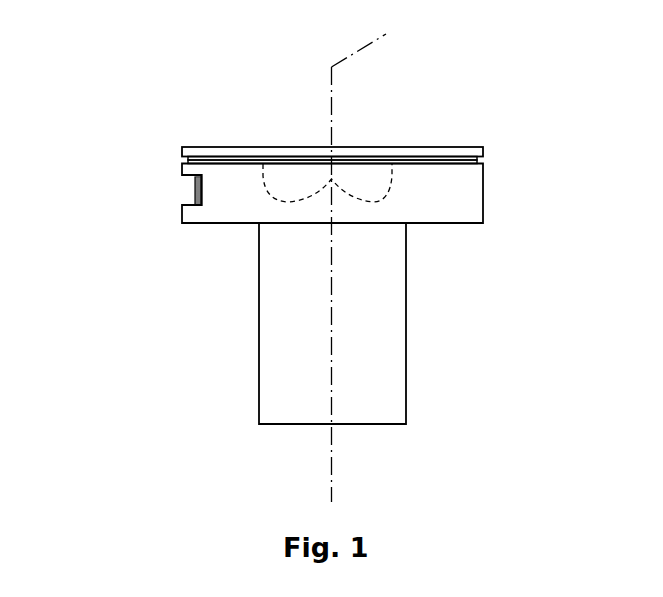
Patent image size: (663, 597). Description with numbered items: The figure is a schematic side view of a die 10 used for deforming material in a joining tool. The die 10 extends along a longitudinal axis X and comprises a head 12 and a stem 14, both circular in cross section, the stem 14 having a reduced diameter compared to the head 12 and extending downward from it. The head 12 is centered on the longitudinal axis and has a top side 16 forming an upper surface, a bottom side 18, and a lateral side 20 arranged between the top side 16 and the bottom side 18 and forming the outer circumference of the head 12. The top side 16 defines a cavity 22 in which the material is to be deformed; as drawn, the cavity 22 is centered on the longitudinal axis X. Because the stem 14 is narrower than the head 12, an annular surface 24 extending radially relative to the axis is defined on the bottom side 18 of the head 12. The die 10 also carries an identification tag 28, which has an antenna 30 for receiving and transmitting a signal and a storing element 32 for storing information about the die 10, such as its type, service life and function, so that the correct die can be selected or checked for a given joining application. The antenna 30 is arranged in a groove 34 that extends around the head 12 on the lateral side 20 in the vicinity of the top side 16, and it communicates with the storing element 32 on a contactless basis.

The die 10 is at (486, 88).
The head 12 is at (473, 188).
The stem 14 is at (382, 342).
The top side 16 is at (222, 150).
The bottom side 18 is at (207, 224).
The lateral side 20 is at (484, 210).
The cavity 22 is at (308, 166).
The annular surface 24 is at (192, 190).
The identification tag 28 is at (74, 210).
The antenna 30 is at (188, 161).
The storing element 32 is at (194, 190).
The groove 34 is at (480, 160).